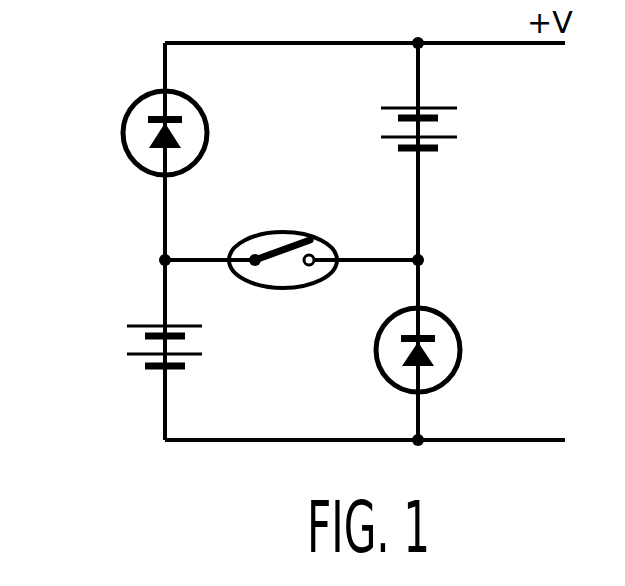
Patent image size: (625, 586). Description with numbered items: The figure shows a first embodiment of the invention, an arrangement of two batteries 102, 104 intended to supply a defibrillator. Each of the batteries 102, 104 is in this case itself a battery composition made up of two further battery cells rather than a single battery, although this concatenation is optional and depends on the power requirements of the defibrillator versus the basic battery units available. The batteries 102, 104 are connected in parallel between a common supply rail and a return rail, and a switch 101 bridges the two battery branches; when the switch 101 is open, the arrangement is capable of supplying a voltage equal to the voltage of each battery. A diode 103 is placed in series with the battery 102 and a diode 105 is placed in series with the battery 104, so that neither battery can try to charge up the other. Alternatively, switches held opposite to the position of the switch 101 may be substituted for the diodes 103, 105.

The switch 101 is at (280, 230).
The battery 102 is at (129, 340).
The diode 103 is at (126, 123).
The battery 104 is at (447, 126).
The diode 105 is at (460, 350).